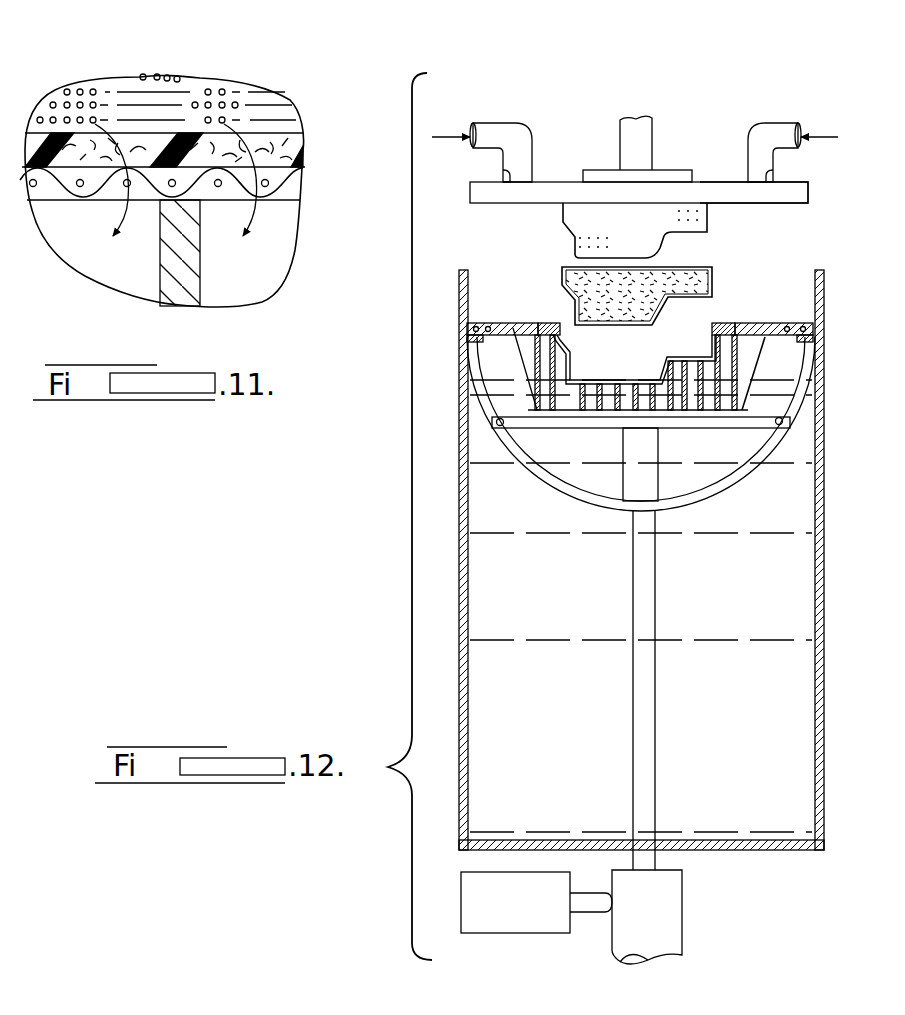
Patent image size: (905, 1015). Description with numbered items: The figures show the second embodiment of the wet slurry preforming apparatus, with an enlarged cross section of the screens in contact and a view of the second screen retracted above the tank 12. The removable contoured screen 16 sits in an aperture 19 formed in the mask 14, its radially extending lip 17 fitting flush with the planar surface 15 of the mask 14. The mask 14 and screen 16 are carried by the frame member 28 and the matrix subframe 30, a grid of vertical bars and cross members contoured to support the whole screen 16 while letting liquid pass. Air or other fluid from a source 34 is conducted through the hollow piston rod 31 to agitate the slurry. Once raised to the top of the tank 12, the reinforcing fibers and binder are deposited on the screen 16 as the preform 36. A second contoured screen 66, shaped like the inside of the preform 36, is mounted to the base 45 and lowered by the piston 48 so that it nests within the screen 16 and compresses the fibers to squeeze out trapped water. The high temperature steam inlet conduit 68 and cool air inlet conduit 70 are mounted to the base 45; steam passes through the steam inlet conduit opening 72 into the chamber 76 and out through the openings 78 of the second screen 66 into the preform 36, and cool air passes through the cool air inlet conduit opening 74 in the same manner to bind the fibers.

In FIG. 12, the tank 12 is at (824, 584).
In FIG. 12, the mask 14 is at (513, 323).
In FIG. 12, the planar surface 15 is at (773, 323).
In FIG. 11, the contoured screen 16 is at (296, 183).
In FIG. 12, the contoured screen 16 is at (664, 360).
In FIG. 12, the radially extending lip 17 is at (722, 322).
In FIG. 12, the aperture 19 is at (548, 322).
In FIG. 12, the frame member 28 is at (720, 487).
In FIG. 11, the matrix subframe 30 is at (178, 298).
In FIG. 12, the matrix subframe 30 is at (775, 357).
In FIG. 12, the hollow piston rod 31 is at (658, 747).
In FIG. 12, the source 34 is at (511, 934).
In FIG. 11, the preform 36 is at (300, 146).
In FIG. 12, the preform 36 is at (715, 277).
In FIG. 12, the base 45 is at (808, 192).
In FIG. 12, the piston 48 is at (650, 131).
In FIG. 11, the second contoured screen 66 is at (268, 100).
In FIG. 12, the second contoured screen 66 is at (698, 230).
In FIG. 12, the high temperature steam inlet conduit 68 is at (530, 131).
In FIG. 12, the cool air inlet conduit 70 is at (756, 131).
In FIG. 12, the high temperature steam inlet conduit opening 72 is at (503, 172).
In FIG. 12, the cool air inlet conduit opening 74 is at (766, 172).
In FIG. 12, the chamber 76 is at (485, 193).
In FIG. 11, the openings 78 is at (93, 89).